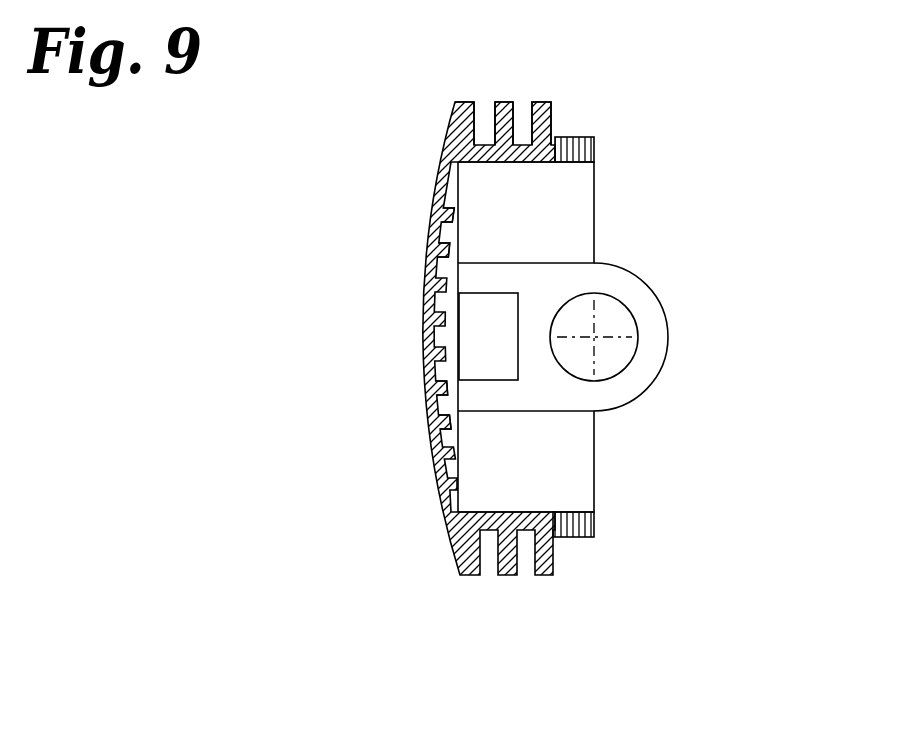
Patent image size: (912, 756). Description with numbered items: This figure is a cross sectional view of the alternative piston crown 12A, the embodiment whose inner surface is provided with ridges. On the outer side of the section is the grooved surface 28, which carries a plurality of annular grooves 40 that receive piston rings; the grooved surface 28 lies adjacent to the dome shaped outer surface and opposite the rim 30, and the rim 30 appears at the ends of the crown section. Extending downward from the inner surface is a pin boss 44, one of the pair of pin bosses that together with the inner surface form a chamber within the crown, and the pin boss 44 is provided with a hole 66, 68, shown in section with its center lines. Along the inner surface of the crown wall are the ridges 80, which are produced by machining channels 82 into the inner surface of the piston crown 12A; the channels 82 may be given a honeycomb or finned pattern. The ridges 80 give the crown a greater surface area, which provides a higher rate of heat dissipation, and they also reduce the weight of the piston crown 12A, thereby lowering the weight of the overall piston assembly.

The piston crown 12A is at (358, 252).
The grooved surface 28 is at (492, 597).
The rim 30 is at (583, 137).
The annular grooves 40 is at (525, 145).
The pin boss 44 is at (642, 378).
The hole 66 is at (595, 337).
The hole 68 is at (594, 337).
The ridges 80 is at (447, 429).
The channels 82 is at (440, 240).